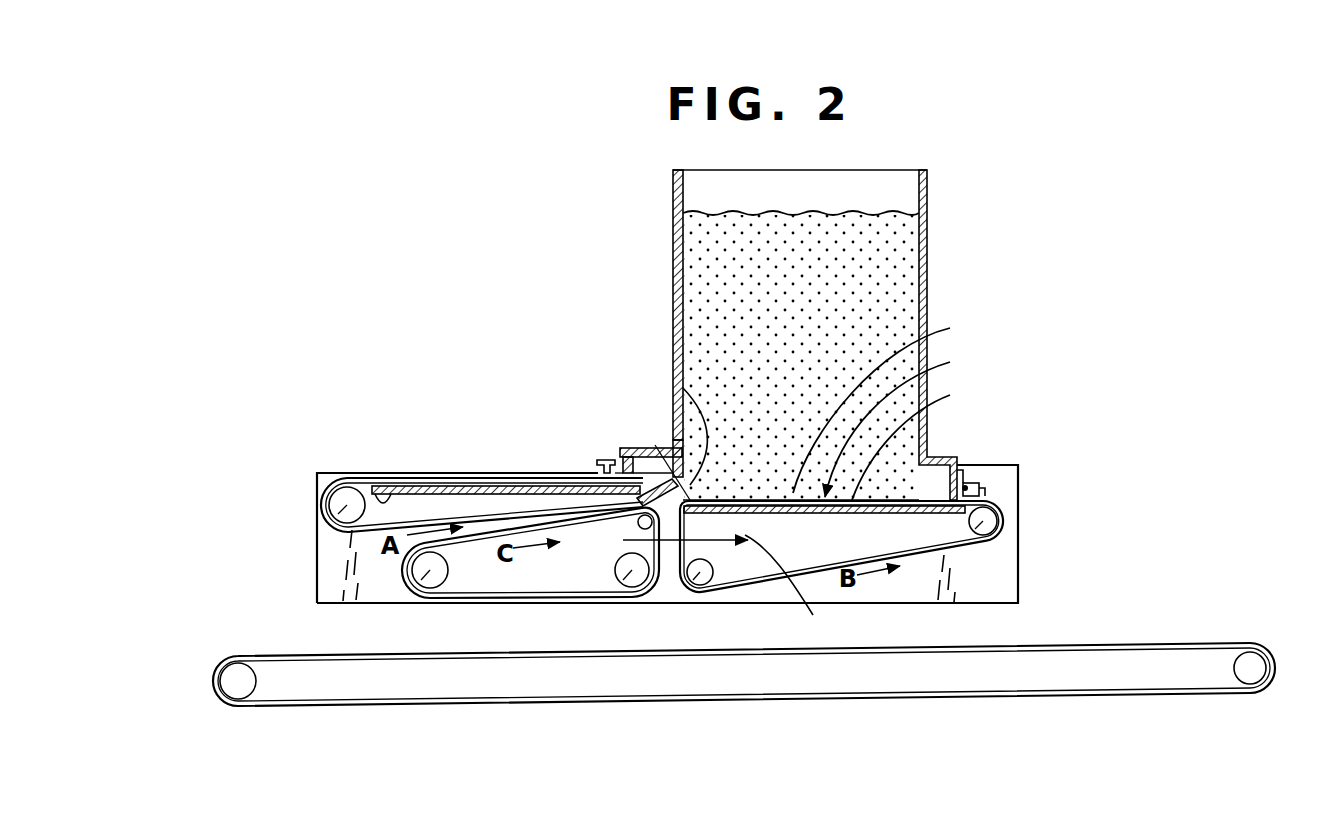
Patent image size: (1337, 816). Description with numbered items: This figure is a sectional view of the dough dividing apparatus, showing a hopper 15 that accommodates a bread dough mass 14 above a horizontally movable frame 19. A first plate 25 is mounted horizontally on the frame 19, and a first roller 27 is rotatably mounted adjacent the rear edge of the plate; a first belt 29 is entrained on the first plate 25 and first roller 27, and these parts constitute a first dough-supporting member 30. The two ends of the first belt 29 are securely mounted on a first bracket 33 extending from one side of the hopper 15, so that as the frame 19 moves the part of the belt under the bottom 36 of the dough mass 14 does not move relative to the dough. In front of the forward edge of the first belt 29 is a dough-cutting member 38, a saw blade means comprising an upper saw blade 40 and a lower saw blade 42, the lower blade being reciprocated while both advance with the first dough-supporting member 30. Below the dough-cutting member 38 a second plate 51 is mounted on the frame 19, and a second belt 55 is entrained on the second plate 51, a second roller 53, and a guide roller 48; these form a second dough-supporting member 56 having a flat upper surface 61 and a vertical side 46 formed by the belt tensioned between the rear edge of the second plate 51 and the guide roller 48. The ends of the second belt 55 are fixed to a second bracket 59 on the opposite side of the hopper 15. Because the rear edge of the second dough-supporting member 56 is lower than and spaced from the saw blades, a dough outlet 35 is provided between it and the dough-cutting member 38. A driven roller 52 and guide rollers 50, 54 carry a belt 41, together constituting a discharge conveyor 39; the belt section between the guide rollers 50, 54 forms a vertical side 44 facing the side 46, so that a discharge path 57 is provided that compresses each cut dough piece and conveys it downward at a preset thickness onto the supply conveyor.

The bread dough mass 14 is at (860, 213).
The hopper 15 is at (927, 258).
The frame 19 is at (320, 473).
The first plate 25 is at (376, 492).
The first roller 27 is at (342, 510).
The first belt 29 is at (424, 486).
The first dough-supporting member 30 is at (490, 476).
The first bracket 33 is at (603, 460).
The dough outlet 35 is at (680, 395).
The bottom 36 is at (889, 402).
The dough-cutting member 38 is at (668, 445).
The discharge conveyor 39 is at (482, 604).
The upper saw blade 40 is at (640, 447).
The belt 41 is at (407, 553).
The lower saw blade 42 is at (788, 589).
The side 44 is at (612, 588).
The side 46 is at (718, 589).
The guide roller 48 is at (702, 582).
The guide roller 50 is at (630, 578).
The second plate 51 is at (1000, 544).
The driven roller 52 is at (428, 578).
The second roller 53 is at (998, 497).
The guide roller 54 is at (641, 527).
The second belt 55 is at (998, 521).
The second dough-supporting member 56 is at (905, 422).
The discharge path 57 is at (658, 590).
The second bracket 59 is at (957, 458).
The flat upper surface 61 is at (918, 439).